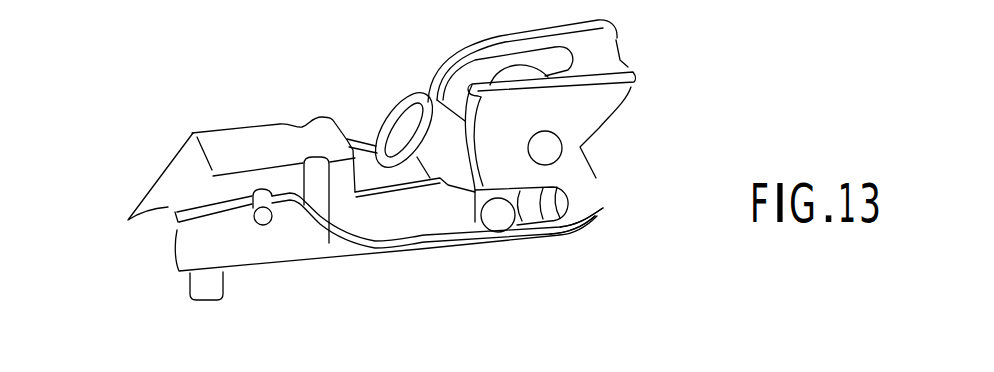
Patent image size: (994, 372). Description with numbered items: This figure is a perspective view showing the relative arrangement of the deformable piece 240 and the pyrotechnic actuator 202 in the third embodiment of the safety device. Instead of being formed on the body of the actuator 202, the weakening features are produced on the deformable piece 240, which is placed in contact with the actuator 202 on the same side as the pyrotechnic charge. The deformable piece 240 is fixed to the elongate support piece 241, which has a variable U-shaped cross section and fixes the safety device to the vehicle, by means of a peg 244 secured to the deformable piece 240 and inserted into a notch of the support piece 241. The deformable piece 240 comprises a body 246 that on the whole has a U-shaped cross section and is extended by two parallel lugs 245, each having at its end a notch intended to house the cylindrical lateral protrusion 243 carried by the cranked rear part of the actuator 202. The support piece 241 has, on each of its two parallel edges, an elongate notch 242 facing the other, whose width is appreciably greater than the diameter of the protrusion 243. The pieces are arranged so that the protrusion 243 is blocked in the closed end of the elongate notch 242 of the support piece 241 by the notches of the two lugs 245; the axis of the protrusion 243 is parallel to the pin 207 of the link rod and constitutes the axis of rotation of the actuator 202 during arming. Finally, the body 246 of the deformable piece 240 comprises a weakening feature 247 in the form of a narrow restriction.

The pyrotechnic actuator 202 is at (397, 127).
The pin 207 is at (563, 147).
The deformable piece 240 is at (211, 192).
The support piece 241 is at (268, 238).
The elongate notch 242 is at (603, 208).
The cylindrical lateral protrusion 243 is at (500, 220).
The peg 244 is at (257, 222).
The lugs 245 is at (405, 205).
The body 246 is at (254, 153).
The weakening feature 247 is at (316, 177).